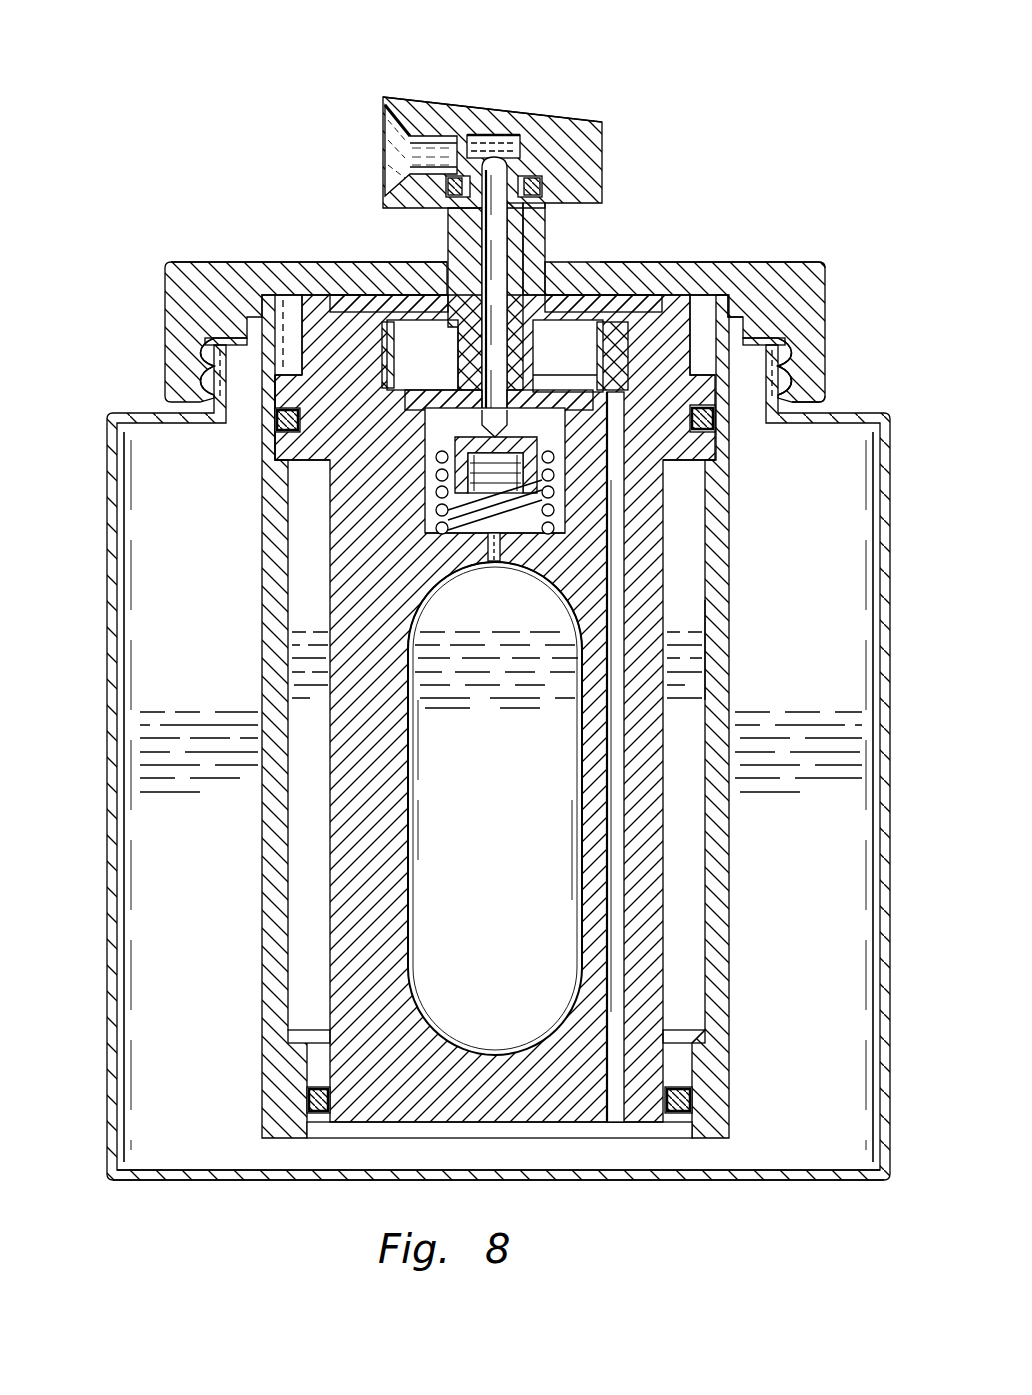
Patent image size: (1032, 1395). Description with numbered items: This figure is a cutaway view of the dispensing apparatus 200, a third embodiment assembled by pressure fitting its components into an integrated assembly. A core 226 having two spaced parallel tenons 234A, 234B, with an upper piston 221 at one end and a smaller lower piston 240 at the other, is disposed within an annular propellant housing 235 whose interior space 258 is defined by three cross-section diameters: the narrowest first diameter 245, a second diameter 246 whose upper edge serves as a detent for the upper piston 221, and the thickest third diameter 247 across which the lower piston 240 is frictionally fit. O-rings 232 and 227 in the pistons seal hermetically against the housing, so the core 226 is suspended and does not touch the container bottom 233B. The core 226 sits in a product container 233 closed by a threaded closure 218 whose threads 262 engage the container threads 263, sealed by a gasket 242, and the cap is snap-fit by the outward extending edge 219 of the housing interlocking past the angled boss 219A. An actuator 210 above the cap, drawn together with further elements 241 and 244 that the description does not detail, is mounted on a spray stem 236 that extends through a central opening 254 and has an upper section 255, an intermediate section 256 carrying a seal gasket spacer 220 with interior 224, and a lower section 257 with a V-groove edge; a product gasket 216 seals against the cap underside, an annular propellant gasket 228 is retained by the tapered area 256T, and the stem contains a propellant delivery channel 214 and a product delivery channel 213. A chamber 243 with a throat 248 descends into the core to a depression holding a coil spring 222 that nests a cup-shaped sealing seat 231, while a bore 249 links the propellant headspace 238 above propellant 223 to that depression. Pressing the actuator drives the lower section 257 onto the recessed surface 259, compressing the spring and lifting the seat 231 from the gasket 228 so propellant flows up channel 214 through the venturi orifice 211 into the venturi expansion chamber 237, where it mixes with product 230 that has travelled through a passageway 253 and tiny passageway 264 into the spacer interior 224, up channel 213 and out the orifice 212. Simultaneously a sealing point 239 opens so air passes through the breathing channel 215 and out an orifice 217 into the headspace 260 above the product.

The dispensing apparatus 200 is at (478, 636).
The actuator 210 is at (438, 96).
The venturi orifice 211 is at (458, 152).
The orifice 212 is at (425, 176).
The product delivery channel 213 is at (525, 235).
The propellant delivery channel 214 is at (497, 250).
The breathing channel 215 is at (668, 260).
The product gasket 216 is at (310, 262).
The orifice 217 is at (775, 345).
The threaded closure 218 is at (163, 260).
The outward extending edge 219 is at (767, 260).
The angled boss 219A is at (712, 330).
The seal gasket spacer 220 is at (790, 385).
The upper piston 221 is at (537, 445).
The coil spring 222 is at (538, 488).
The propellant 223 is at (500, 630).
The spacer interior 224 is at (590, 364).
The core 226 is at (410, 553).
The O-ring 227 is at (692, 1090).
The annular propellant gasket 228 is at (278, 455).
The product 230 is at (775, 790).
The sealing seat 231 is at (555, 500).
The O-ring 232 is at (276, 420).
The product container 233 is at (112, 1077).
The container bottom 233B is at (662, 1180).
The tenon 234A is at (410, 792).
The tenon 234B is at (582, 860).
The annular propellant housing 235 is at (260, 913).
The spray stem 236 is at (443, 226).
The venturi expansion chamber 237 is at (425, 140).
The headspace 238 is at (330, 618).
The sealing point 239 is at (568, 352).
The lower piston 240 is at (213, 377).
The spring recess 241 is at (520, 150).
The gasket 242 is at (212, 338).
The chamber 243 is at (203, 362).
The housing upper wall 244 is at (545, 212).
The first diameter 245 is at (593, 405).
The second diameter 246 is at (718, 640).
The third diameter 247 is at (263, 1092).
The throat 248 is at (705, 463).
The bore 249 is at (497, 568).
The passageway 253 is at (716, 420).
The central opening 254 is at (447, 262).
The upper section 255 is at (447, 238).
The intermediate section 256 is at (458, 338).
The tapered area 256T is at (283, 472).
The lower section 257 is at (427, 450).
The interior space 258 is at (690, 677).
The recessed surface 259 is at (427, 478).
The headspace 260 is at (215, 681).
The threads 262 is at (792, 358).
The threads 263 is at (795, 401).
The tiny passageway 264 is at (736, 318).